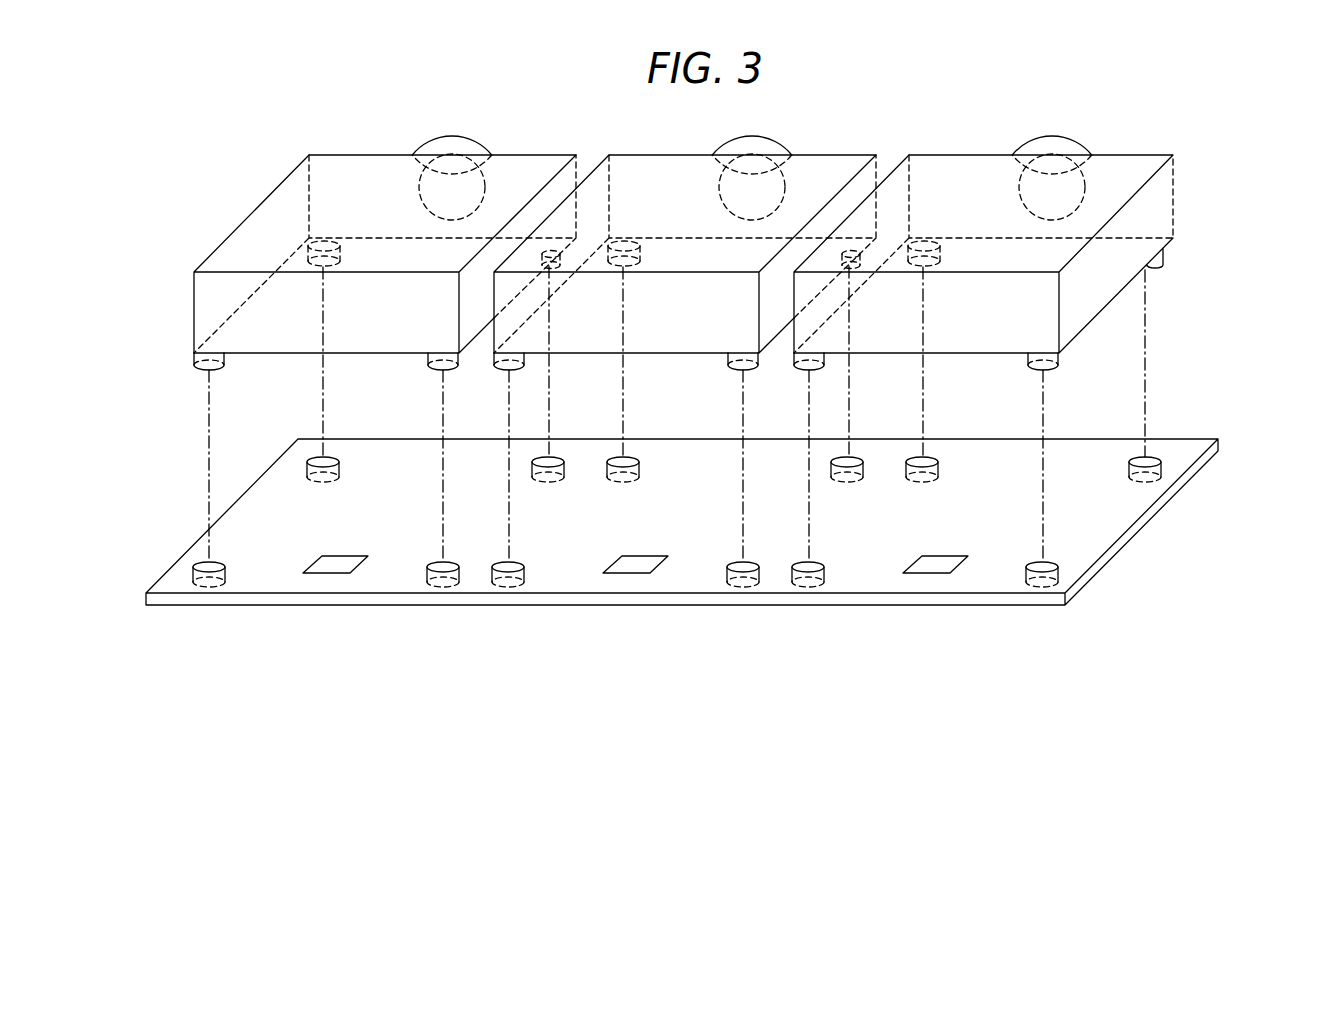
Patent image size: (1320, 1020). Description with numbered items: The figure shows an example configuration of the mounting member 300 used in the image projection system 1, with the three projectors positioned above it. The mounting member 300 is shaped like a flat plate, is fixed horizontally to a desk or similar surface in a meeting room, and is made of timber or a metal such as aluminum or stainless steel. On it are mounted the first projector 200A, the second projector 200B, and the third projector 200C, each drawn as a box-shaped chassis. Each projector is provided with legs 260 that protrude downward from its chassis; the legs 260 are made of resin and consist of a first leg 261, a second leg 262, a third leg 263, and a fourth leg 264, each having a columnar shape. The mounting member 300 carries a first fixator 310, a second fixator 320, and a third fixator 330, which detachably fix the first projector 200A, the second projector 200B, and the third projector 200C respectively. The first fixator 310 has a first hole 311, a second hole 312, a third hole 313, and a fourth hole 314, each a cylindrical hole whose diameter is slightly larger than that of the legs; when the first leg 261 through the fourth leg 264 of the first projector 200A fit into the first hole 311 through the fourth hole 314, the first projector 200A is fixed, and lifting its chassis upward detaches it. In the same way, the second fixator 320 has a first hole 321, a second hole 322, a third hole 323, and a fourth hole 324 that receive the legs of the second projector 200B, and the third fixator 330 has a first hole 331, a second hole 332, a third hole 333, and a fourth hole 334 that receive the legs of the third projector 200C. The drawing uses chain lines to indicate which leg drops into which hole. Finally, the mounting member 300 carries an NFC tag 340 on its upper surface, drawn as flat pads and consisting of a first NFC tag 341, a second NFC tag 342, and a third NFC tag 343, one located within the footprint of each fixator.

The image projection system 1 is at (1228, 176).
The first projector 200A is at (365, 167).
The second projector 200B is at (665, 167).
The third projector 200C is at (965, 167).
The legs 260 is at (723, 335).
The first leg 261 is at (326, 256).
The second leg 262 is at (226, 362).
The third leg 263 is at (427, 362).
The fourth leg 264 is at (560, 262).
The mounting member 300 is at (1095, 551).
The first fixator 310 is at (391, 562).
The first hole 311 is at (323, 483).
The second hole 312 is at (210, 588).
The third hole 313 is at (443, 588).
The fourth hole 314 is at (548, 483).
The second fixator 320 is at (697, 562).
The first hole 321 is at (625, 483).
The second hole 322 is at (508, 588).
The third hole 323 is at (743, 588).
The fourth hole 324 is at (847, 483).
The third fixator 330 is at (1025, 562).
The first hole 331 is at (923, 483).
The second hole 332 is at (808, 588).
The third hole 333 is at (1043, 588).
The fourth hole 334 is at (1148, 476).
The NFC tag 340 is at (643, 624).
The first NFC tag 341 is at (330, 567).
The second NFC tag 342 is at (630, 567).
The third NFC tag 343 is at (928, 567).